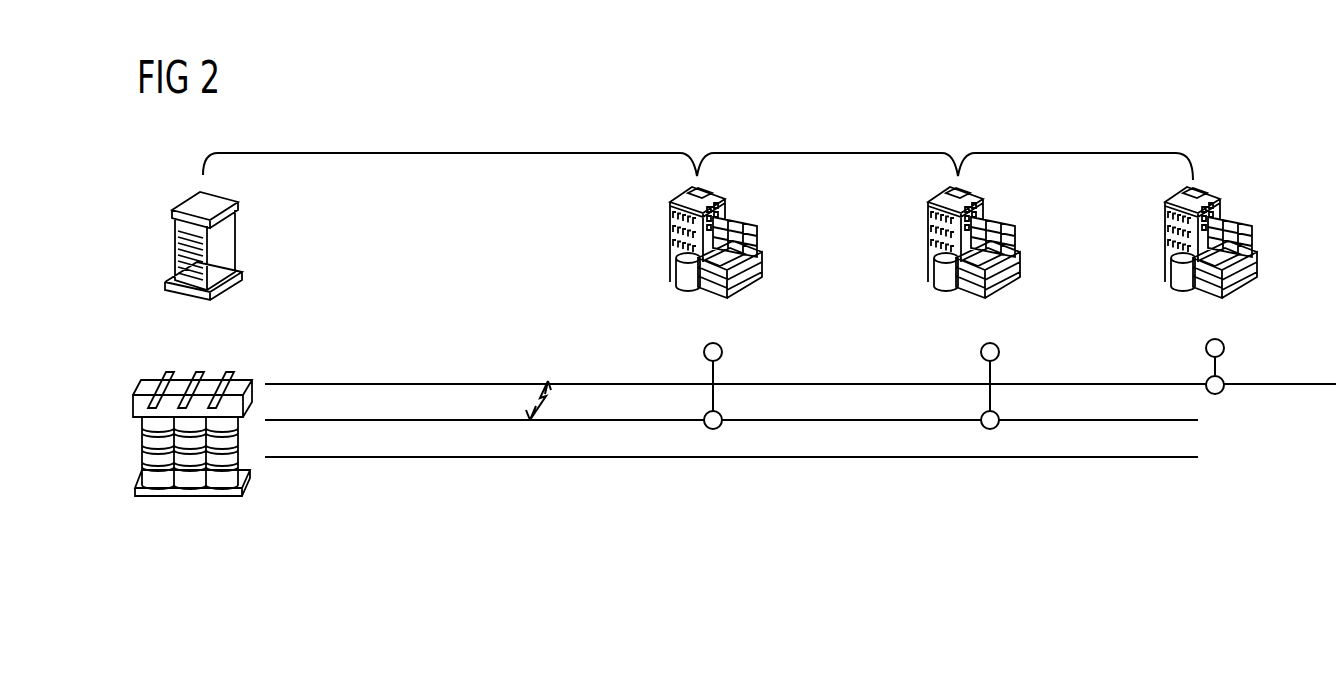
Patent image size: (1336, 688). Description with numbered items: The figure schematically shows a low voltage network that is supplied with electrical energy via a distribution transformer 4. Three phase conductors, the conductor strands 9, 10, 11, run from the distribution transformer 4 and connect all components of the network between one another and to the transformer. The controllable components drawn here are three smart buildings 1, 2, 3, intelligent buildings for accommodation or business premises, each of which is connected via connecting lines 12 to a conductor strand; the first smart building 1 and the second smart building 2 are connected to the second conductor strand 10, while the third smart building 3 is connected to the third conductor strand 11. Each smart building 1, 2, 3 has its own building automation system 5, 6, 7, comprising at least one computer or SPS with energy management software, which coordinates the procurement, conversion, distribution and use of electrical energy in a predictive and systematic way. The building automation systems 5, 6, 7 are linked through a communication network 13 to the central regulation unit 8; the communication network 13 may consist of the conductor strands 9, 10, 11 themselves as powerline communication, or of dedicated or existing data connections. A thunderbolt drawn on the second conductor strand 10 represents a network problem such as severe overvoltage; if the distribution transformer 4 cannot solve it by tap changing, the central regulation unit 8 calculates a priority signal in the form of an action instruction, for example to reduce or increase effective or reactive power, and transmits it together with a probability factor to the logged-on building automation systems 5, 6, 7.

The first smart building 1 is at (763, 266).
The second smart building 2 is at (1021, 266).
The third smart building 3 is at (1258, 266).
The distribution transformer 4 is at (248, 482).
The building automation system 5 is at (716, 242).
The building automation system 6 is at (974, 242).
The building automation system 7 is at (1211, 242).
The central regulation unit 8 is at (238, 233).
The first conductor strand 9 is at (542, 459).
The second conductor strand 10 is at (457, 418).
The third conductor strand 11 is at (384, 381).
The connecting lines 12 is at (716, 372).
The communication network 13 is at (450, 152).